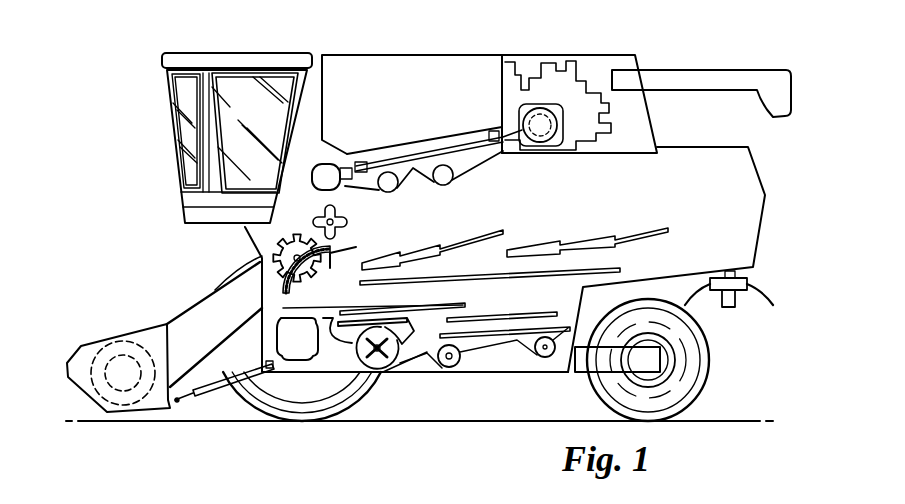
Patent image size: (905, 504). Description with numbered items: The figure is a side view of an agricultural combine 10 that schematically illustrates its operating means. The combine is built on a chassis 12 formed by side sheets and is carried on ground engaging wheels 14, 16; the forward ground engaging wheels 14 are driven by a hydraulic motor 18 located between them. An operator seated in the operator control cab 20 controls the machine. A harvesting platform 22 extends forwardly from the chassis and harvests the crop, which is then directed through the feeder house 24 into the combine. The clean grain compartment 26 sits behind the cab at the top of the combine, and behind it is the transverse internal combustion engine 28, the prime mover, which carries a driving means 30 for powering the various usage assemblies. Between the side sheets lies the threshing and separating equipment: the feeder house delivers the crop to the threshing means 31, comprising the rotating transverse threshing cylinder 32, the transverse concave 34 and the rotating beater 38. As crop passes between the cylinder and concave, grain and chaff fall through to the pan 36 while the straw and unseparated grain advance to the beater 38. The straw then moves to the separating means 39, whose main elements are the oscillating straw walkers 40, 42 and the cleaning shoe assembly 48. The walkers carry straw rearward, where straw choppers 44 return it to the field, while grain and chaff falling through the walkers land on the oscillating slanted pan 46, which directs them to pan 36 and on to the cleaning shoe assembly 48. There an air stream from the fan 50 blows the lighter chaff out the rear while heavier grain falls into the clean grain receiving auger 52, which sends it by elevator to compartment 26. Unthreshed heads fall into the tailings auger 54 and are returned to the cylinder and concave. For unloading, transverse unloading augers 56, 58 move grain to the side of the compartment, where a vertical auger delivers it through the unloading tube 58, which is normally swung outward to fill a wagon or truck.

The agricultural combine 10 is at (150, 196).
The chassis 12 is at (485, 368).
The forward ground engaging wheels 14 is at (282, 405).
The ground engaging wheels 16 is at (707, 368).
The hydraulic motor 18 is at (306, 349).
The operator control cab 20 is at (260, 116).
The harvesting platform 22 is at (113, 321).
The feeder house 24 is at (183, 286).
The clean grain compartment 26 is at (420, 110).
The transverse internal combustion engine 28 is at (541, 52).
The driving means 30 is at (587, 84).
The threshing means 31 is at (305, 205).
The transverse threshing cylinder 32 is at (272, 253).
The transverse concave 34 is at (330, 270).
The pan 36 is at (403, 310).
The rotating beater 38 is at (345, 219).
The separating means 39 is at (597, 180).
The straw walker 40 is at (463, 240).
The straw walker 42 is at (637, 230).
The straw choppers 44 is at (756, 279).
The oscillating slanted pan 46 is at (518, 273).
The cleaning shoe assembly 48 is at (530, 307).
The fan 50 is at (382, 368).
The clean grain receiving auger 52 is at (442, 373).
The tailings auger 54 is at (545, 360).
The transverse unloading auger 56 is at (403, 183).
The unloading tube 58 is at (700, 77).